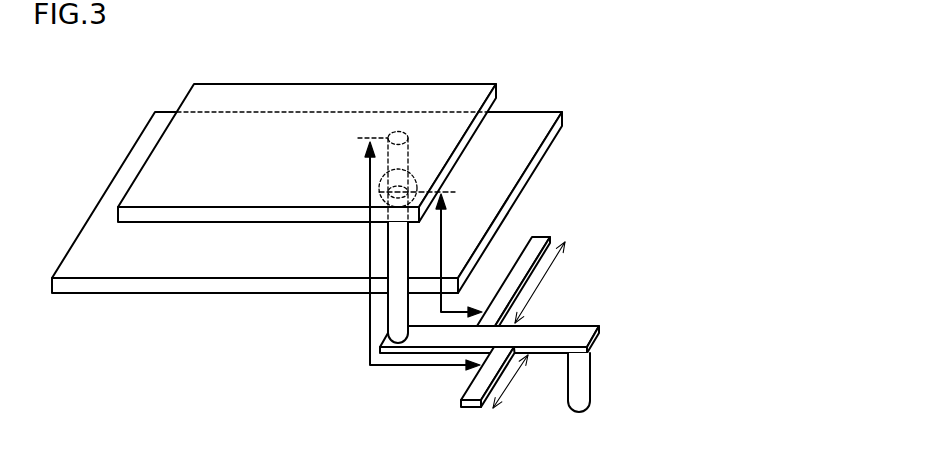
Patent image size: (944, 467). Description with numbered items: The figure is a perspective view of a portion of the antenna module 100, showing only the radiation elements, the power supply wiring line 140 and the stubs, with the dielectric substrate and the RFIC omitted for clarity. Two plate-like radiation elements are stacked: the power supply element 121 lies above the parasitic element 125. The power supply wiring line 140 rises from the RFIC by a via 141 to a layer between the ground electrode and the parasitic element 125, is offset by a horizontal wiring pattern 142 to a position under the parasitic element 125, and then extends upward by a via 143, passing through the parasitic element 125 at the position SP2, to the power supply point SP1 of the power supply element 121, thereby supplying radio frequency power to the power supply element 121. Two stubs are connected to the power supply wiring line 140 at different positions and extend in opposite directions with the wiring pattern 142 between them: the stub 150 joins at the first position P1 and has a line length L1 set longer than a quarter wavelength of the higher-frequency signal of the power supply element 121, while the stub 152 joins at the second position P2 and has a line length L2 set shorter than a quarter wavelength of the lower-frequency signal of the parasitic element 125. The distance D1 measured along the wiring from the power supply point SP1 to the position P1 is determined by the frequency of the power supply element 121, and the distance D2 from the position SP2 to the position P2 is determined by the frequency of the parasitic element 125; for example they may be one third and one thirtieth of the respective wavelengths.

The antenna module 100 is at (370, 231).
The power supply element 121 is at (482, 88).
The parasitic element 125 is at (545, 118).
The power supply wiring line 140 is at (493, 275).
The via 141 is at (612, 355).
The wiring pattern 142 is at (582, 332).
The via 143 is at (392, 318).
The stub 150 is at (468, 408).
The stub 152 is at (538, 237).
The power supply point SP1 is at (398, 131).
The position at which the power supply wiring line passes through the parasitic elem SP2 is at (402, 190).
The first position P1 is at (507, 347).
The second position P2 is at (483, 311).
The line length of the stub 150 L1 is at (516, 381).
The line length of the stub 152 L2 is at (545, 282).
The distance D1 is at (392, 367).
The distance D2 is at (441, 219).